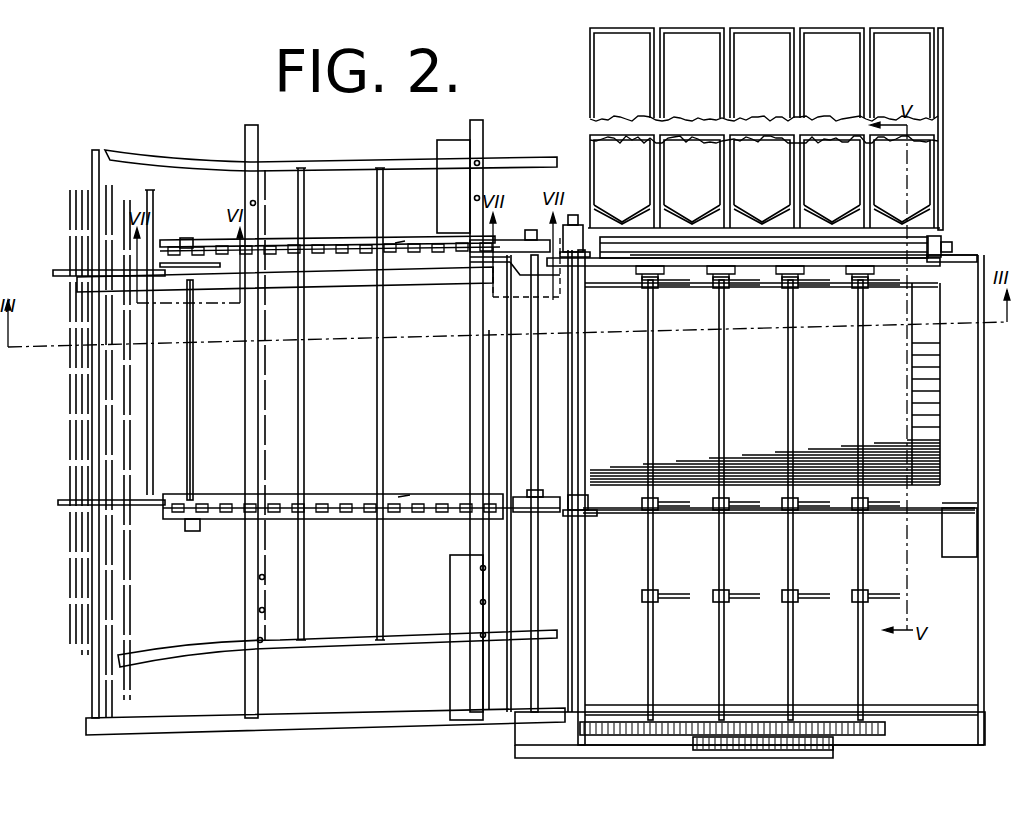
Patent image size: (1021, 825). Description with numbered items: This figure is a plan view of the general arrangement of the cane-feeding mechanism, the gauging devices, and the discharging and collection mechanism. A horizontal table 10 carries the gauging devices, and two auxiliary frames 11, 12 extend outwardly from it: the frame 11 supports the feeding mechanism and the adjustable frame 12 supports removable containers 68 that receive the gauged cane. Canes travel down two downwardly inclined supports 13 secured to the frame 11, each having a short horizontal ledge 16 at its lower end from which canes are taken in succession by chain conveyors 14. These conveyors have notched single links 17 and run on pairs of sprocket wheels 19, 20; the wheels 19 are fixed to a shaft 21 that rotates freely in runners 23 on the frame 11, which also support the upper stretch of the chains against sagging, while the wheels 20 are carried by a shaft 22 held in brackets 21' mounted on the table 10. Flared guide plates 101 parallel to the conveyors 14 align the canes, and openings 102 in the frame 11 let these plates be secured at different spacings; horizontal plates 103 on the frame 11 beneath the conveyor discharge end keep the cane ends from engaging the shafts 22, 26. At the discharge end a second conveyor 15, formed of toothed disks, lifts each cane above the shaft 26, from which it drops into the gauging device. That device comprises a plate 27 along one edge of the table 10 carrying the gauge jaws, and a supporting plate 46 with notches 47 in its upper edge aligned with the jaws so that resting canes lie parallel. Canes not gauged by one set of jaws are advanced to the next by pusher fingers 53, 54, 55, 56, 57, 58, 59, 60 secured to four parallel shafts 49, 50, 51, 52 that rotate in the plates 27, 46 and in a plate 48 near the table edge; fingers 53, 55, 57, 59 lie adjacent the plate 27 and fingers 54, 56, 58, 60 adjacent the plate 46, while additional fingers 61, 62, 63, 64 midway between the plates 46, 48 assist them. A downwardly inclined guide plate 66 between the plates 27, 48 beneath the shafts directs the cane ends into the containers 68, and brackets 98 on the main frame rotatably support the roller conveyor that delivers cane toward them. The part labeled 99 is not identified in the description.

The horizontal table 10 is at (980, 450).
The auxiliary frame 11 is at (408, 725).
The auxiliary frame 12 is at (944, 190).
The downwardly inclined supports 13 is at (53, 272).
The chain conveyors 14 is at (322, 244).
The second conveyor 15 is at (567, 235).
The short horizontal ledge 16 is at (157, 280).
The single links 17 is at (345, 285).
The sprocket wheels 19 is at (180, 240).
The sprocket wheels 20 is at (512, 240).
The shaft 21 is at (210, 390).
The brackets 21' is at (523, 417).
The shaft 22 is at (538, 405).
The runners 23 is at (402, 241).
The shaft 26 is at (586, 430).
The plate 27 is at (950, 258).
The supporting plate 46 is at (955, 500).
The notches 47 is at (617, 515).
The plate 48 is at (935, 703).
The shaft 49 is at (654, 420).
The shaft 50 is at (725, 420).
The shaft 51 is at (794, 413).
The shaft 52 is at (864, 373).
The pusher finger 53 is at (672, 284).
The pusher finger 54 is at (676, 502).
The pusher finger 55 is at (740, 284).
The pusher finger 56 is at (746, 502).
The pusher finger 57 is at (810, 284).
The pusher finger 58 is at (816, 502).
The pusher finger 59 is at (890, 282).
The pusher finger 60 is at (885, 500).
The finger 61 is at (678, 592).
The finger 62 is at (745, 592).
The finger 63 is at (812, 590).
The finger 64 is at (878, 588).
The downwardly inclined guide plate 66 is at (940, 400).
The removable containers 68 is at (600, 90).
The brackets 98 is at (940, 242).
The side plate 99 is at (92, 157).
The flared guide plates 101 is at (278, 165).
The openings 102 is at (256, 203).
The horizontal plates 103 is at (448, 673).